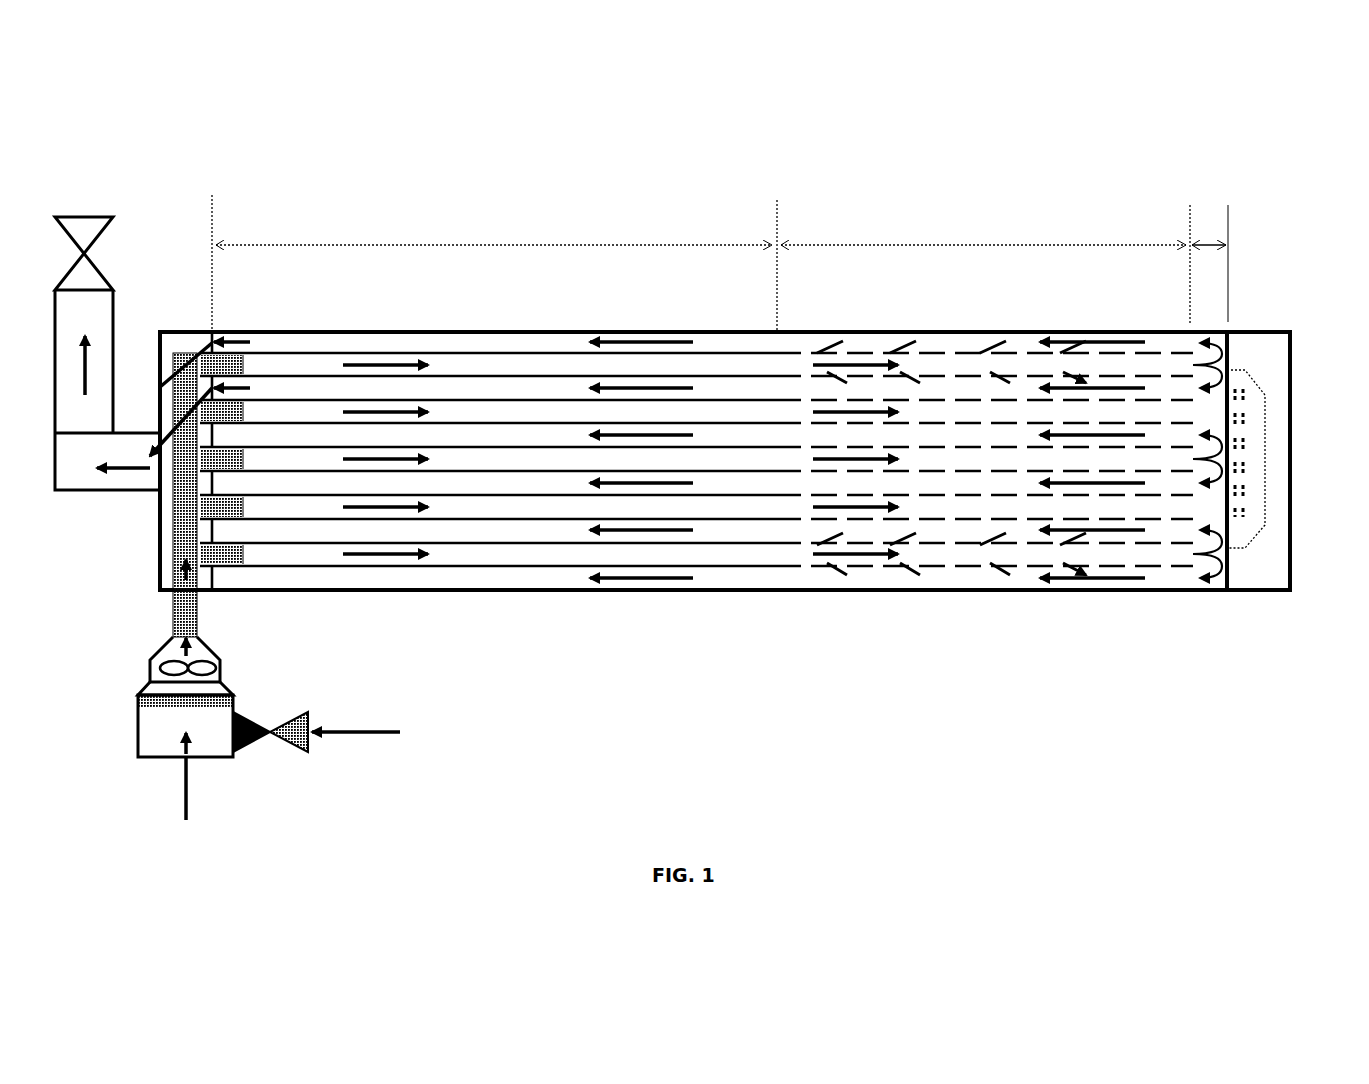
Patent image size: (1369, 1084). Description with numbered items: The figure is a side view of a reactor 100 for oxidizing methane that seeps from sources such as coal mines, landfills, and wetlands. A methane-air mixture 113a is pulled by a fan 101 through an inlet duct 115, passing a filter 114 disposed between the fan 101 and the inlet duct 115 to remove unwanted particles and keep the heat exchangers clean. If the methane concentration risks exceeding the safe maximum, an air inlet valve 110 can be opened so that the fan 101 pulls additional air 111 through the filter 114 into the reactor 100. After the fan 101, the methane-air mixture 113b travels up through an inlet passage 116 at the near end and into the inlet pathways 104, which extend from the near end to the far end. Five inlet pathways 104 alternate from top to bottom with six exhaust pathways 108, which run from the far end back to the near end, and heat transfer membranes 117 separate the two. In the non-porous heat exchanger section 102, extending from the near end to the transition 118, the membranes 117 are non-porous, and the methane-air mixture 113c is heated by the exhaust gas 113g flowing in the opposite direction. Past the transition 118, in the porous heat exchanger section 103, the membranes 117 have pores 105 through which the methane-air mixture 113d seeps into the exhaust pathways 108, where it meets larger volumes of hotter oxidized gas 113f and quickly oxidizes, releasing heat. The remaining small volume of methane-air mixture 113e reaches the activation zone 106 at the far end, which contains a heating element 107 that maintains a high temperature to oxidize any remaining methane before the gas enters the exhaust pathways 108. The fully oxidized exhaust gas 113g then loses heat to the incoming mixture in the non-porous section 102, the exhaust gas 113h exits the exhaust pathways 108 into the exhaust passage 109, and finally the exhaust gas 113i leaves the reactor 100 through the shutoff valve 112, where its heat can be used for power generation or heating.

The reactor 100 is at (620, 170).
The fan 101 is at (222, 666).
The non-porous heat exchanger section 102 is at (492, 263).
The porous heat exchanger section 103 is at (983, 232).
The inlet pathways 104 is at (262, 552).
The pores 105 is at (943, 567).
The activation zone 106 is at (1209, 265).
The heating element 107 is at (1245, 437).
The exhaust pathways 108 is at (758, 580).
The exhaust passage 109 is at (98, 328).
The air inlet valve 110 is at (288, 754).
The air 111 is at (380, 745).
The shutoff valve 112 is at (102, 272).
The methane-air mixture 113a is at (194, 803).
The methane-air mixture 113b is at (175, 623).
The methane-air mixture 113c is at (362, 502).
The methane-air mixture 113d is at (983, 550).
The methane-air mixture 113e is at (1203, 575).
The oxidized gas 113f is at (1118, 373).
The exhaust gas 113g is at (662, 480).
The exhaust gas 113h is at (193, 475).
The exhaust gas 113i is at (84, 365).
The filter 114 is at (155, 700).
The inlet duct 115 is at (152, 735).
The inlet passage 116 is at (185, 533).
The heat transfer membranes 117 is at (530, 566).
The transition 118 is at (780, 196).